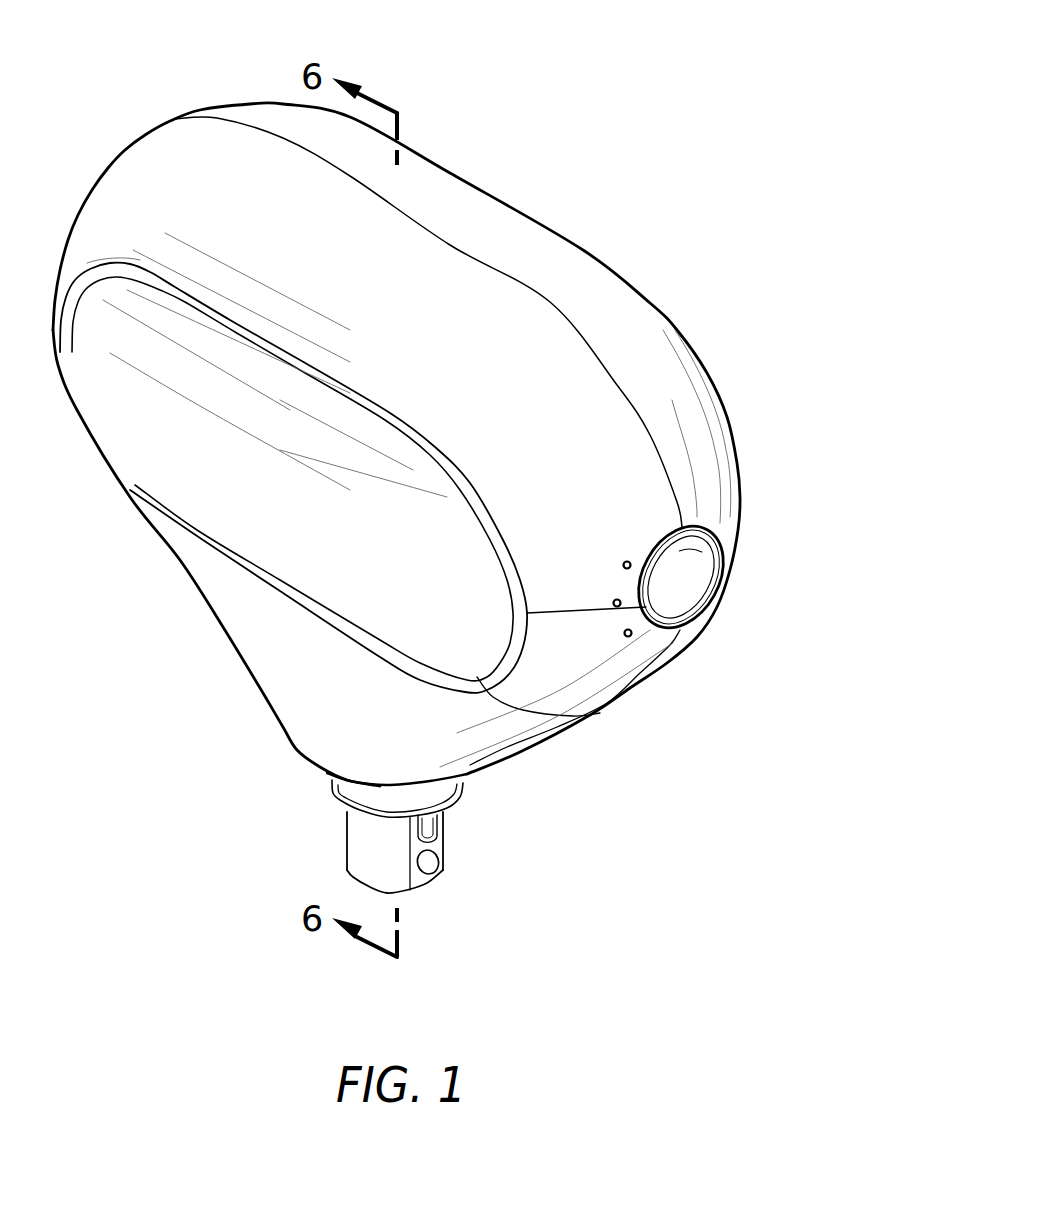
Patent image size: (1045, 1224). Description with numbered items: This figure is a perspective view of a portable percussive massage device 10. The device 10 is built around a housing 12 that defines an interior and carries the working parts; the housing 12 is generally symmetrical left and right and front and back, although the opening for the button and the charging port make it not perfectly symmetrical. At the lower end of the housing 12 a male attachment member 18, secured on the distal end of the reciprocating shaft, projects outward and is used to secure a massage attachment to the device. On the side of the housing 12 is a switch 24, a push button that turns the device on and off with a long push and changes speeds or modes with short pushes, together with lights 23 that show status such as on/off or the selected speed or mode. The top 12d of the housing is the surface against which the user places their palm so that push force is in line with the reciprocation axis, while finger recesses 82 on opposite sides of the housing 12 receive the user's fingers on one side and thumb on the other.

The portable percussive massage device 10 is at (640, 106).
The housing 12 is at (628, 330).
The top of the housing 12d is at (471, 215).
The attachment member 18 is at (373, 861).
The lights 23 is at (627, 566).
The switch 24 is at (688, 582).
The finger recesses 82 is at (180, 458).